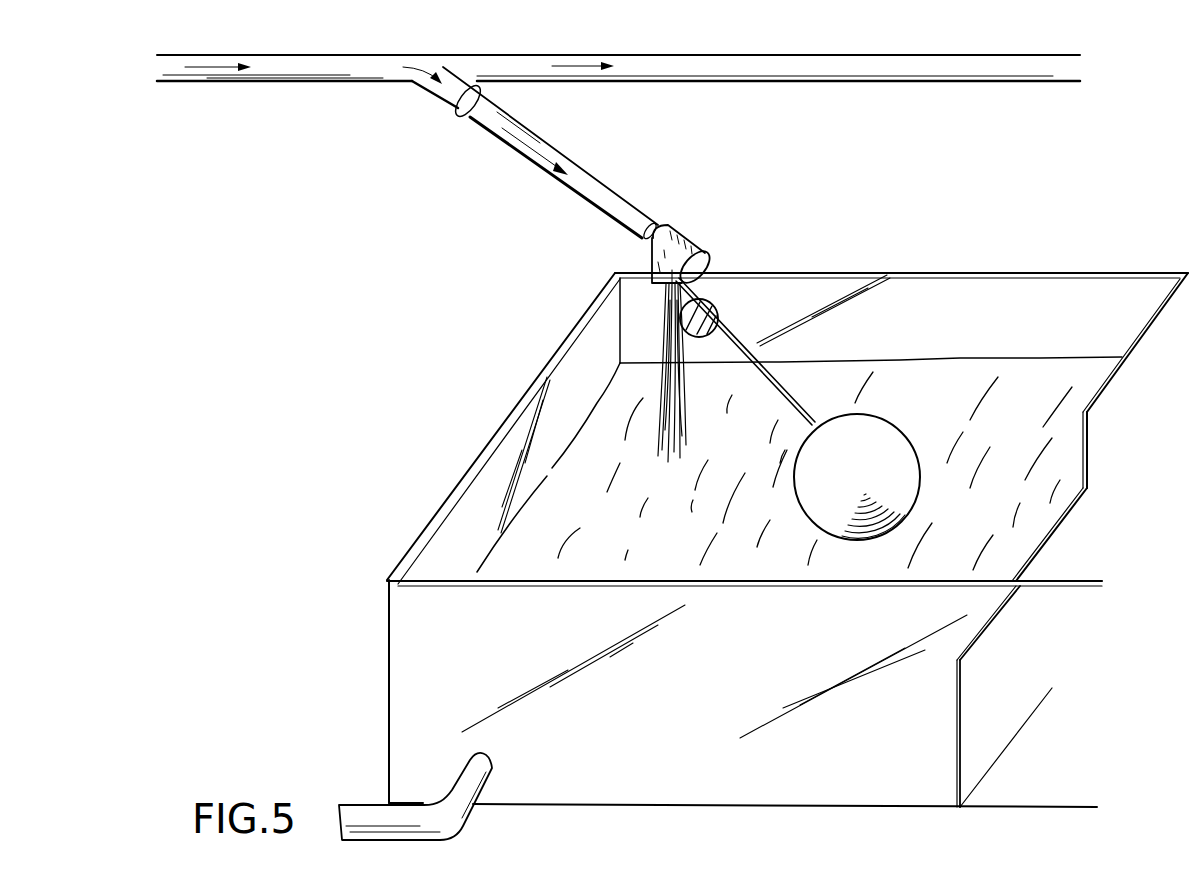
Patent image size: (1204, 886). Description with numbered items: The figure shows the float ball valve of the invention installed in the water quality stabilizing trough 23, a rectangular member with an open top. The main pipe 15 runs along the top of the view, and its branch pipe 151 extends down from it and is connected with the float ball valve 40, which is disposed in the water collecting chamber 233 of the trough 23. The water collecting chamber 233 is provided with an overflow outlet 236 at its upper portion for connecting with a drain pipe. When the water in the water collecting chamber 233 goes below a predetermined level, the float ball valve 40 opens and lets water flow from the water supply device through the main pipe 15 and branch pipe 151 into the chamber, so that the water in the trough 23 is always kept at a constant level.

The main pipe 15 is at (918, 63).
The branch pipe 151 is at (452, 95).
The overflow outlet 236 is at (712, 305).
The water collecting chamber 233 is at (902, 327).
The float ball valve 40 is at (898, 462).
The water quality stabilizing trough 23 is at (418, 677).